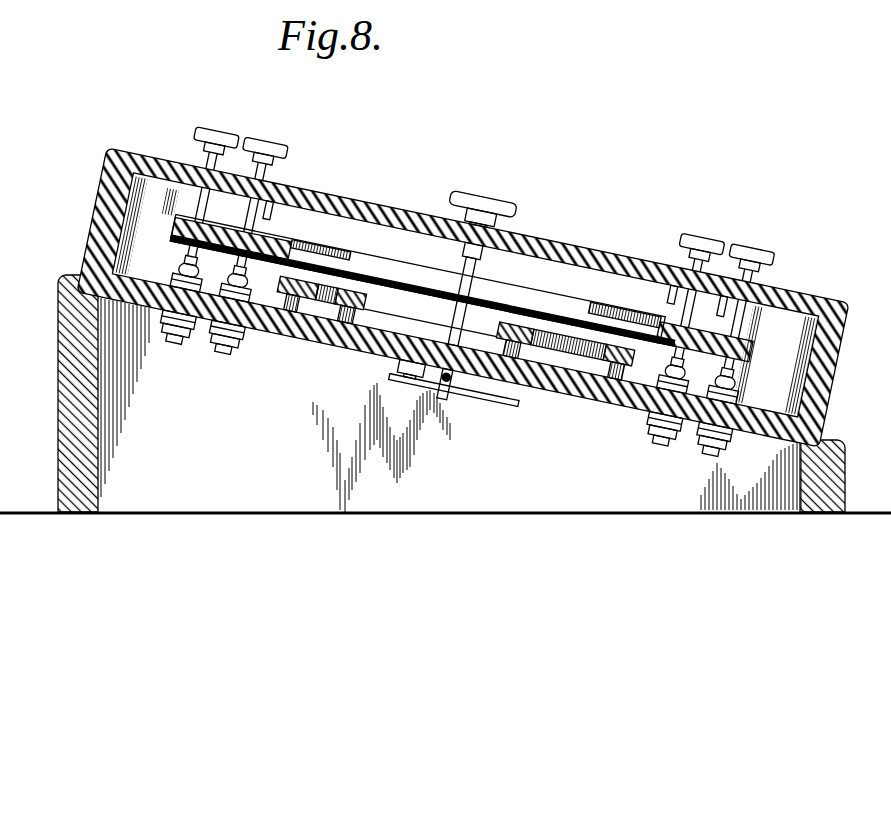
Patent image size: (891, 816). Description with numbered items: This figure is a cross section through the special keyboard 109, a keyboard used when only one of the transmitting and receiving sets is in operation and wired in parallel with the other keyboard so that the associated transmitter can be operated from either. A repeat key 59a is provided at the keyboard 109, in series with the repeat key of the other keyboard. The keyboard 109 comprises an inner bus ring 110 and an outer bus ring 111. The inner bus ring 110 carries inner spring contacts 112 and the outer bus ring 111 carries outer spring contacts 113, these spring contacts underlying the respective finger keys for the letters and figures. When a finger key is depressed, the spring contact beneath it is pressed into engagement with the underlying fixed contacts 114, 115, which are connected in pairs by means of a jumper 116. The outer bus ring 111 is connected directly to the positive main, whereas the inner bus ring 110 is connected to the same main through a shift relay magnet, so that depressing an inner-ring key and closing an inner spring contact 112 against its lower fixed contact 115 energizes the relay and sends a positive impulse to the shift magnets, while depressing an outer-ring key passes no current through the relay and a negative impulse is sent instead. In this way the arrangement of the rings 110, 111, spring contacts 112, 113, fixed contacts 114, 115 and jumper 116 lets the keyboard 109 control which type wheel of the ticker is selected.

The repeat key 59a is at (497, 203).
The keyboard 109 is at (604, 244).
The inner bus ring 110 is at (362, 300).
The outer bus ring 111 is at (300, 303).
The inner spring contacts 112 is at (300, 268).
The outer spring contacts 113 is at (276, 276).
The fixed contact 114 is at (193, 343).
The fixed contact 115 is at (238, 372).
The jumper 116 is at (206, 329).